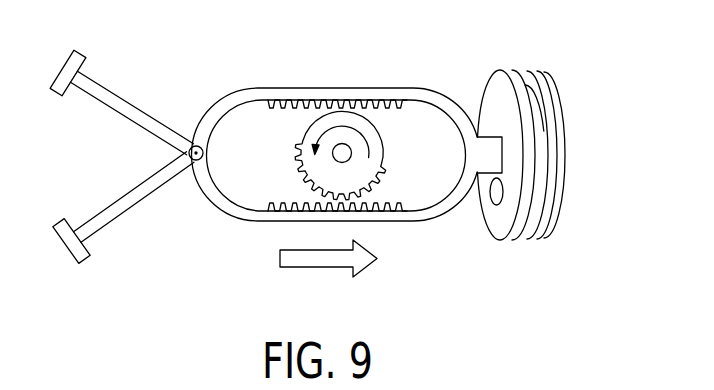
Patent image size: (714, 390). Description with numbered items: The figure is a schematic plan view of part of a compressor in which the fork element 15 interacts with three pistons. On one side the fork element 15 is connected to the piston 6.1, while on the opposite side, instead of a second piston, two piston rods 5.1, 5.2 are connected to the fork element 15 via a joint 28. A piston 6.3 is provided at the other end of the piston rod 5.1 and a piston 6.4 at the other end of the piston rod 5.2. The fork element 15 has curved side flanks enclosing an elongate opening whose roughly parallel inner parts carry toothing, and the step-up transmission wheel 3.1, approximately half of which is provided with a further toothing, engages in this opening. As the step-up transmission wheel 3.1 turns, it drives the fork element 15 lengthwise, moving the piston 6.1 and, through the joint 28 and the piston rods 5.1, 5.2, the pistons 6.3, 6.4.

The fork element 15 is at (323, 88).
The step-up transmission wheel 3.1 is at (367, 130).
The joint 28 is at (194, 166).
The piston rod 5.1 is at (128, 115).
The piston rod 5.2 is at (124, 205).
The piston 6.3 is at (63, 77).
The piston 6.4 is at (72, 242).
The piston 6.1 is at (538, 110).